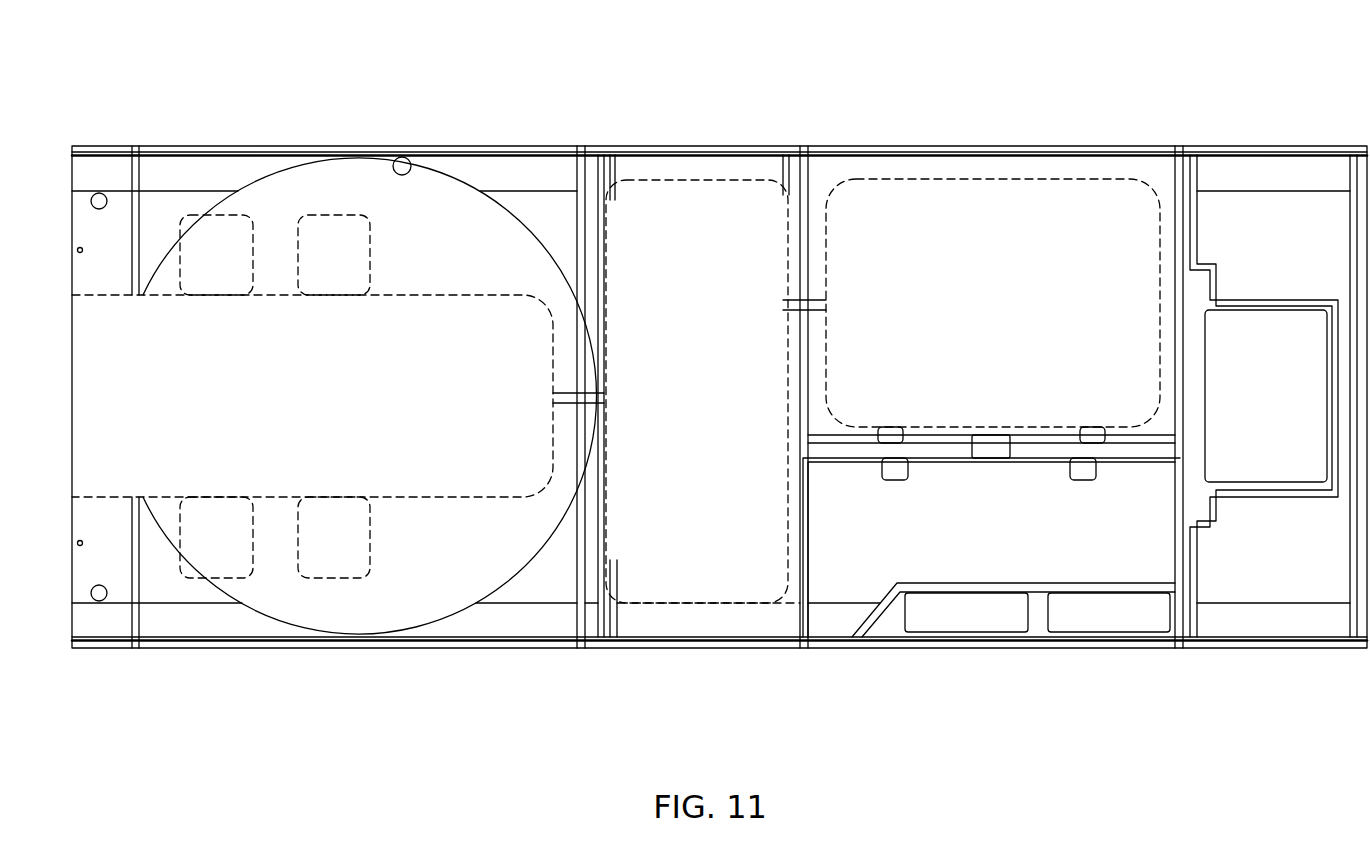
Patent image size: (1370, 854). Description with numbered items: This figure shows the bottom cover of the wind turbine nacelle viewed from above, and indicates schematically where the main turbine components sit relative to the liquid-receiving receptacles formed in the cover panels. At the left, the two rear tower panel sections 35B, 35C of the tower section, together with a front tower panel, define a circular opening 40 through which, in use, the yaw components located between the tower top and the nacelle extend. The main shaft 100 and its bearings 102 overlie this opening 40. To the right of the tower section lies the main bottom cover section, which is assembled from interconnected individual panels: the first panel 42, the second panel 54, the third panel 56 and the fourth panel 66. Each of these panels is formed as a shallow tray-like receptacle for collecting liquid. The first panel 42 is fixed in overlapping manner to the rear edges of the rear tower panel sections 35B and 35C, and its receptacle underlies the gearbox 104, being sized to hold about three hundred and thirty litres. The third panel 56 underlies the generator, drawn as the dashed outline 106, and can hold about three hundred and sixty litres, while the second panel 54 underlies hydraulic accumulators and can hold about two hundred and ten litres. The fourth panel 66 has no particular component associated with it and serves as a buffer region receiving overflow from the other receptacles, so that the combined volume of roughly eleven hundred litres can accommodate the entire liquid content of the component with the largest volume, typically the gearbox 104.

The rear tower panel section 35B is at (505, 618).
The rear tower panel section 35C is at (525, 175).
The circular opening 40 is at (400, 152).
The first panel 42 is at (715, 178).
The second panel 54 is at (838, 583).
The third panel 56 is at (1150, 175).
The fourth panel 66 is at (1257, 583).
The main shaft 100 is at (422, 475).
The bearings 102 is at (205, 563).
The gearbox 104 is at (683, 583).
The third bay 106 is at (940, 200).